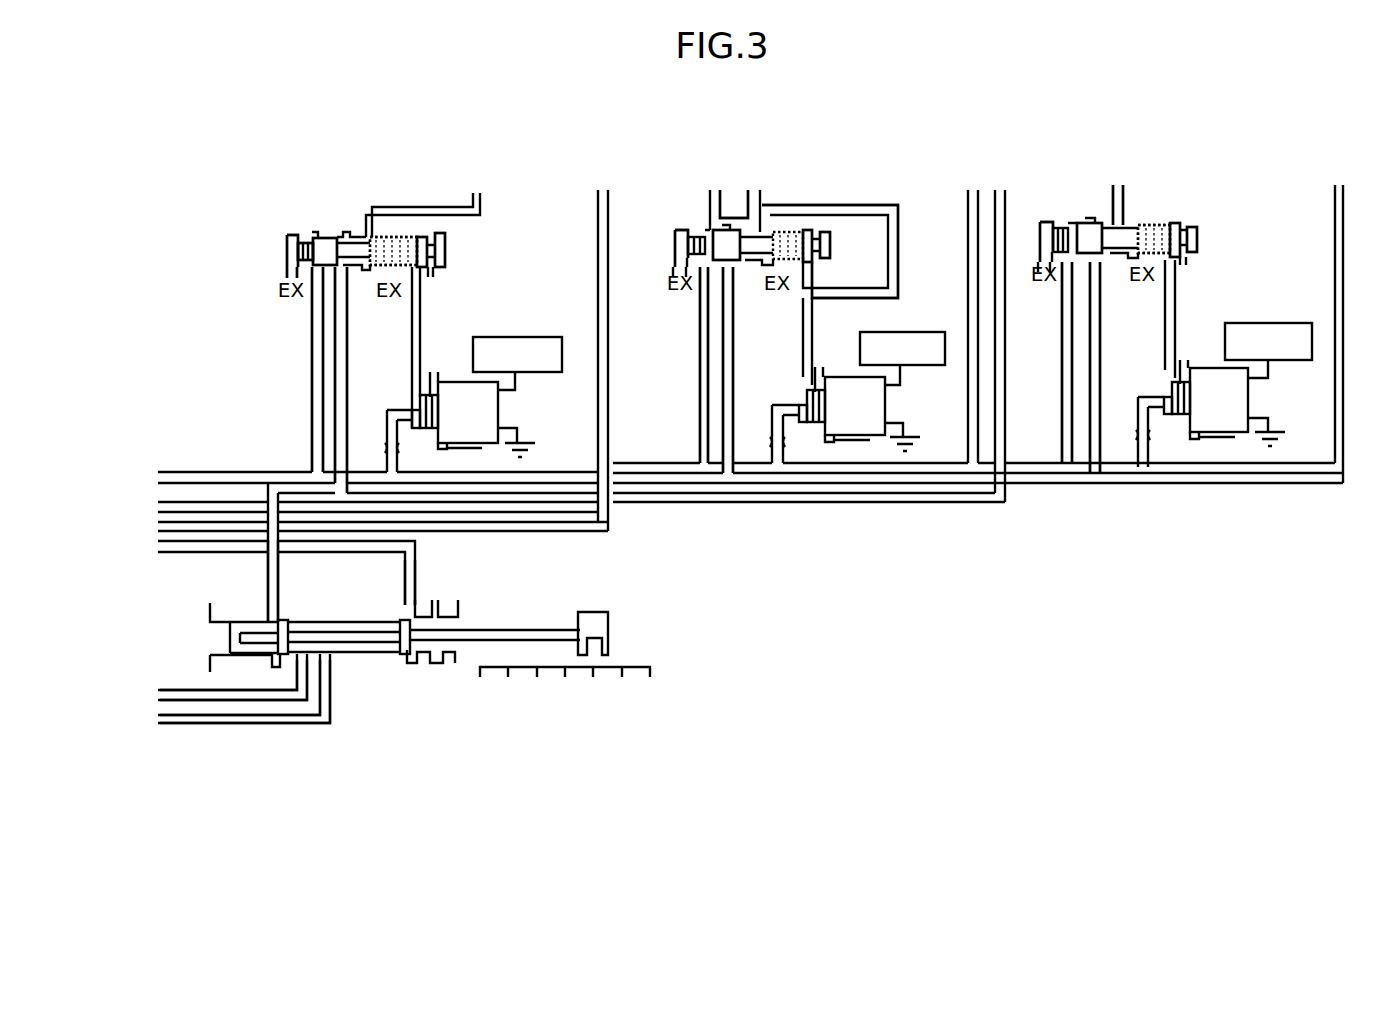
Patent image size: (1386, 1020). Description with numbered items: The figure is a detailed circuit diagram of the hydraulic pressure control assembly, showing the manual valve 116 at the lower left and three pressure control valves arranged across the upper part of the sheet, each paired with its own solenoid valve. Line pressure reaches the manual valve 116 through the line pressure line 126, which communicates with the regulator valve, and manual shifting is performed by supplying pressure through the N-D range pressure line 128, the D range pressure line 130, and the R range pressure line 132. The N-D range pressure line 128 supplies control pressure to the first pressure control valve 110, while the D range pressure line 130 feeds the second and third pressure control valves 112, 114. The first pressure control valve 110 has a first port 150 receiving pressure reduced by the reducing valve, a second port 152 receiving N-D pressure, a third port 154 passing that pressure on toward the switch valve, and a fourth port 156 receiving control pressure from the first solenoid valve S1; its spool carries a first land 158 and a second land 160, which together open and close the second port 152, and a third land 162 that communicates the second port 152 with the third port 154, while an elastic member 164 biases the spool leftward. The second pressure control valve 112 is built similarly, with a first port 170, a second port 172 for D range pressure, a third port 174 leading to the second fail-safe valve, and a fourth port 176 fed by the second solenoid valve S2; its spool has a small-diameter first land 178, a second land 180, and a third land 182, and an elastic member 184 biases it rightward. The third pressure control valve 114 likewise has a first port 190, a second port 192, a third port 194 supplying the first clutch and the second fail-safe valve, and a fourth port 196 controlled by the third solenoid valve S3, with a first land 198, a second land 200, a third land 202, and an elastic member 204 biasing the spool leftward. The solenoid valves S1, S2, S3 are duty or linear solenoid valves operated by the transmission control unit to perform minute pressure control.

The first pressure control valve 110 is at (283, 246).
The second pressure control valve 112 is at (687, 183).
The third pressure control valve 114 is at (1206, 204).
The manual valve 116 is at (667, 637).
The line pressure line 126 is at (332, 717).
The N-D range pressure line 128 is at (290, 693).
The D range pressure line 130 is at (280, 605).
The R range pressure line 132 is at (415, 605).
The first port 150 is at (312, 268).
The second port 152 is at (345, 270).
The third port 154 is at (362, 232).
The fourth port 156 is at (424, 268).
The first land 158 is at (289, 233).
The second land 160 is at (312, 232).
The third land 162 is at (393, 235).
The elastic member 164 is at (437, 253).
The first port 170 is at (699, 270).
The second port 172 is at (729, 270).
The third port 174 is at (753, 220).
The fourth port 176 is at (812, 266).
The first land 178 is at (683, 244).
The second land 180 is at (724, 245).
The third land 182 is at (788, 228).
The elastic member 184 is at (823, 250).
The first port 190 is at (1063, 263).
The second port 192 is at (1096, 262).
The third port 194 is at (1121, 225).
The fourth port 196 is at (1174, 260).
The first land 198 is at (1053, 222).
The second land 200 is at (1089, 222).
The third land 202 is at (1149, 226).
The elastic member 204 is at (1195, 241).
The first solenoid valve S1 is at (520, 407).
The second solenoid valve S2 is at (890, 405).
The third solenoid valve S3 is at (1258, 398).